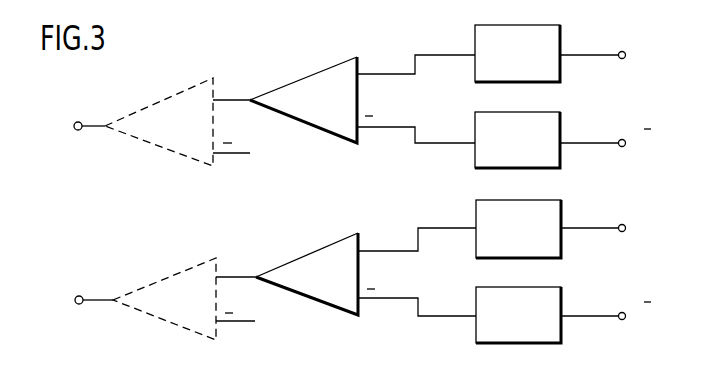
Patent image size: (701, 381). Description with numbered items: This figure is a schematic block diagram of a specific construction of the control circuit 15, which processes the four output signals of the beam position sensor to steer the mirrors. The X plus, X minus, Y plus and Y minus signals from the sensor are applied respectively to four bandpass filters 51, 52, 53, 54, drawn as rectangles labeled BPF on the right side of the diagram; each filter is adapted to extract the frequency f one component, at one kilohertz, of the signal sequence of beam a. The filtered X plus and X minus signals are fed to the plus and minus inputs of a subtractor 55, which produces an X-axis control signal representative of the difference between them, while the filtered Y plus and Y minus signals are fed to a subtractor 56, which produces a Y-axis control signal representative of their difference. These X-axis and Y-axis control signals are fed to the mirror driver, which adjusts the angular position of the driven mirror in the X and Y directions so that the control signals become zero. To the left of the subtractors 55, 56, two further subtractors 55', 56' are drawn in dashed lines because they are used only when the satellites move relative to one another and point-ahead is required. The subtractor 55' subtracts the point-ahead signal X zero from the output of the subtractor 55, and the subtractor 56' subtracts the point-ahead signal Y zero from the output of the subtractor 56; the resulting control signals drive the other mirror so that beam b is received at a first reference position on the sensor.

The control circuit 15 is at (287, 58).
The bandpass filter 51 is at (527, 24).
The bandpass filter 52 is at (527, 112).
The bandpass filter 53 is at (528, 200).
The bandpass filter 54 is at (528, 287).
The subtractor 55 is at (311, 112).
The subtractor 55' is at (153, 122).
The subtractor 56 is at (316, 287).
The subtractor 56' is at (154, 295).